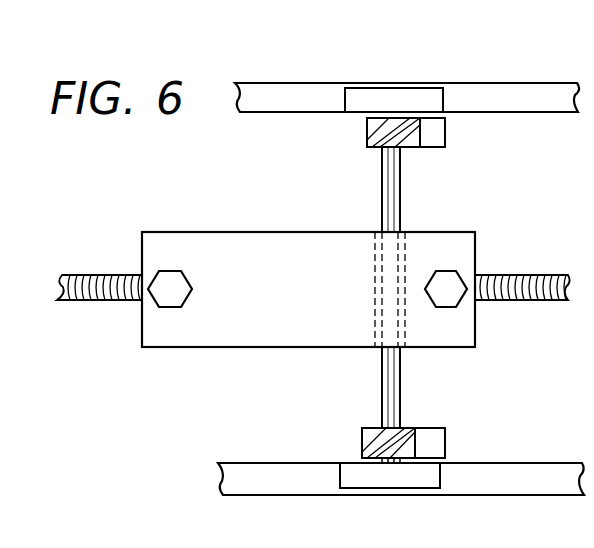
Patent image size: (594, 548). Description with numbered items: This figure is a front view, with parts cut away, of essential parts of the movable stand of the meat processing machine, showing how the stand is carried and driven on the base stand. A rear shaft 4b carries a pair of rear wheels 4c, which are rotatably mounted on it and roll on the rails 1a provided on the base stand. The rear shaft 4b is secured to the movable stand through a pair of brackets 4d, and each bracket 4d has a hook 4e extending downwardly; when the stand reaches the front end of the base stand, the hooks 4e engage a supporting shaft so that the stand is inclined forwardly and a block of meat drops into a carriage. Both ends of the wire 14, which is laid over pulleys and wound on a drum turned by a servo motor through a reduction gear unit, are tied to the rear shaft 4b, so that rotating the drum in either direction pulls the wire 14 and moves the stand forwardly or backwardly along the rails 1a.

The rail 1a is at (557, 105).
The rear shaft 4b is at (390, 170).
The rear wheel 4c is at (422, 90).
The bracket 4d is at (365, 125).
The hook 4e is at (438, 135).
The wire 14 is at (82, 275).